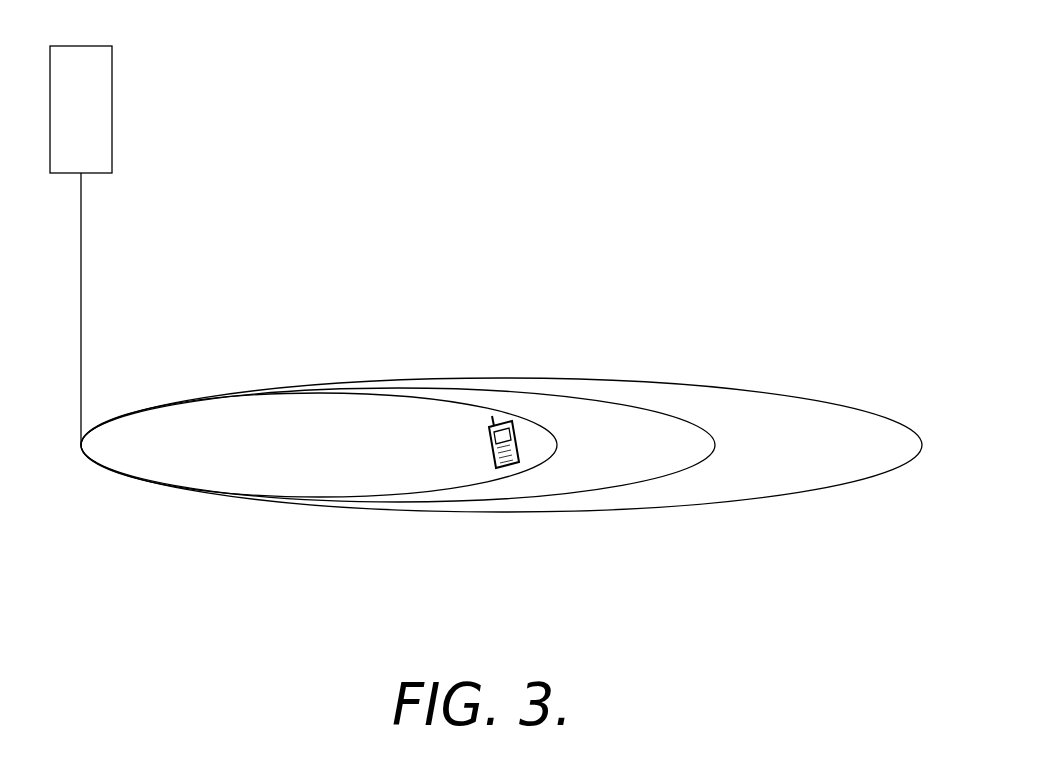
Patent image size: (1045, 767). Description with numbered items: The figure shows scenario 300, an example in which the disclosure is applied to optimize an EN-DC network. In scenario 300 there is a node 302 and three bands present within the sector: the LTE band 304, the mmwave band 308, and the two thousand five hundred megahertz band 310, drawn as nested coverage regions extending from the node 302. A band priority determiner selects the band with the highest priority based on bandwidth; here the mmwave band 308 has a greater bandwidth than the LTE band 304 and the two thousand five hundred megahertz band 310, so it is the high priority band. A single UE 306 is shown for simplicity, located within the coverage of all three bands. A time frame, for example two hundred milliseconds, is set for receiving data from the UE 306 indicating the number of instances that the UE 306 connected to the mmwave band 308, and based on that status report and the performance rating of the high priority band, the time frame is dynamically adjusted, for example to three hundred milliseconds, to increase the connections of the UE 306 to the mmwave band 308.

The scenario 300 is at (672, 65).
The node 302 is at (84, 44).
The LTE band 304 is at (737, 389).
The UE 306 is at (508, 418).
The mmwave band 308 is at (453, 488).
The 2500 MHZ band 310 is at (645, 482).